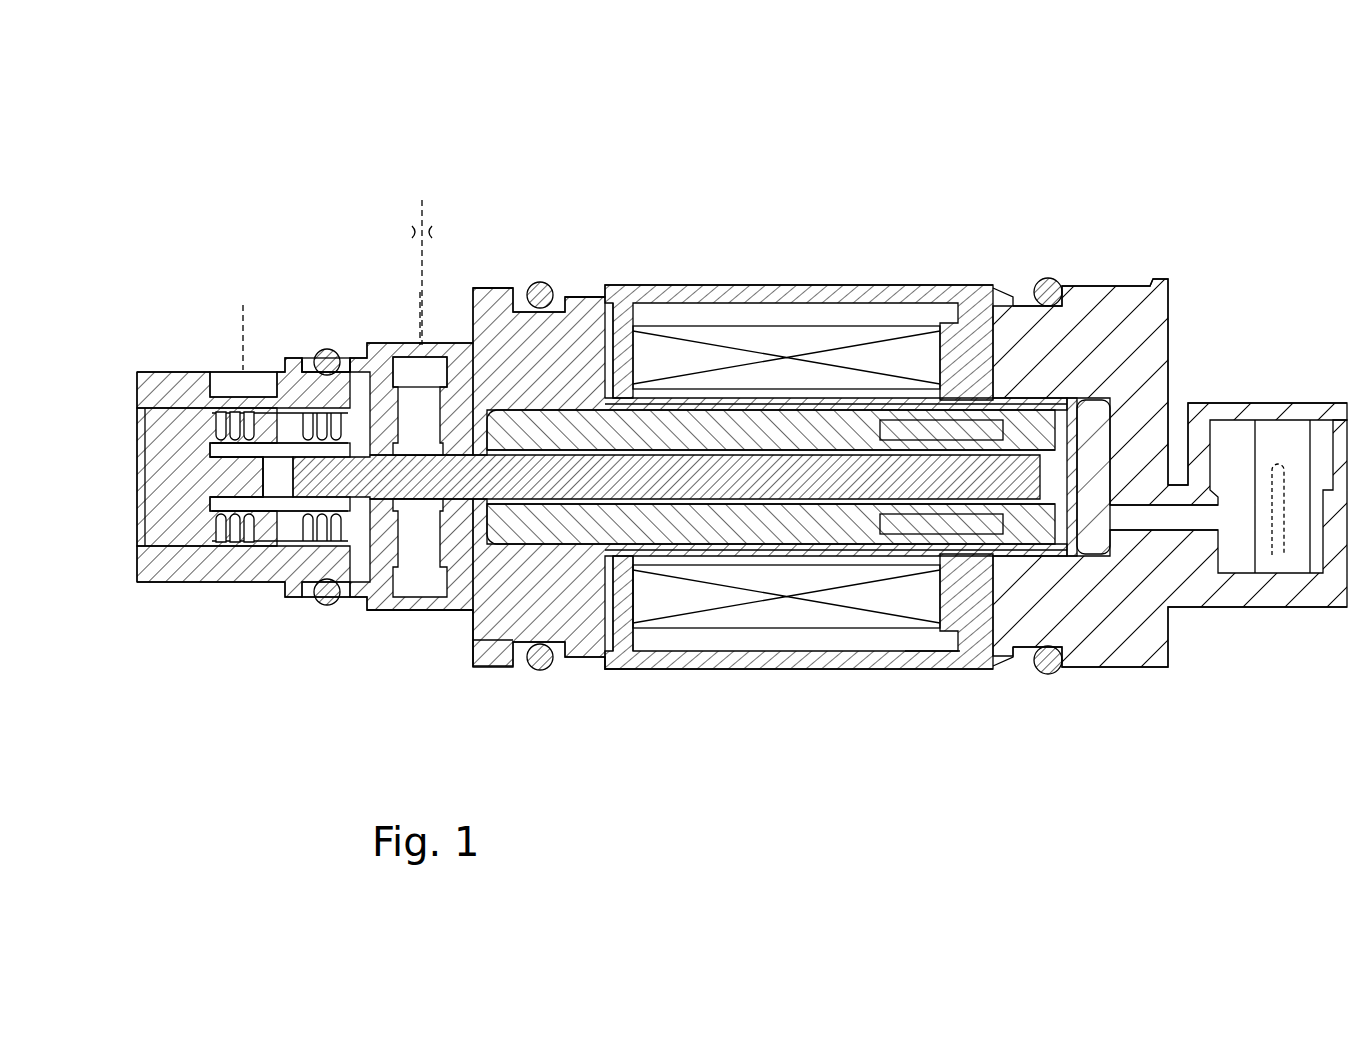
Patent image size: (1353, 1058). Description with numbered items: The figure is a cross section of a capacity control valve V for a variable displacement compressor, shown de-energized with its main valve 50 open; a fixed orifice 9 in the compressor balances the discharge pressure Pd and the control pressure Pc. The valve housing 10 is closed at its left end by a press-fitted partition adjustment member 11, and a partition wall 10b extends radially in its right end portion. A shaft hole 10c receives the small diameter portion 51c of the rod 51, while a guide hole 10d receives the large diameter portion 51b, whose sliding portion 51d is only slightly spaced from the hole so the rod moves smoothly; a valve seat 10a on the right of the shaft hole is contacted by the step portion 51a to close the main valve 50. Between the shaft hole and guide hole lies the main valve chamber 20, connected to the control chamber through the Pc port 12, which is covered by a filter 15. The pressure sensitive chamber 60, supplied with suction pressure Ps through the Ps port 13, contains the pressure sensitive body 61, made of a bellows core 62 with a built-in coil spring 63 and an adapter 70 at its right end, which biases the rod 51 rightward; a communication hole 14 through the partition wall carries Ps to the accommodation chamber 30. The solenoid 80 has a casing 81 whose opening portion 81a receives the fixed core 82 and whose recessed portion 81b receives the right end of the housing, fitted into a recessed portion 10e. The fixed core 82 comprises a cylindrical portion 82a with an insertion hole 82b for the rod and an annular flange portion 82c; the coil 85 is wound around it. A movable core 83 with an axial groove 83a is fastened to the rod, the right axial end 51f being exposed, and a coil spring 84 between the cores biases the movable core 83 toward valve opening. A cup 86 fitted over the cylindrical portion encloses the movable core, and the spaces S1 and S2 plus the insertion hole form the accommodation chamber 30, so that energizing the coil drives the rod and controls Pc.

The capacity control valve V is at (1243, 150).
The valve housing 10 is at (142, 328).
The partition adjustment member 11 is at (136, 460).
The Pc port 12 is at (407, 342).
The Ps port 13 is at (227, 372).
The communication hole 14 is at (450, 613).
The filter 15 is at (395, 613).
The main valve chamber 20 is at (445, 343).
The fixed orifice 9 is at (432, 232).
The main valve 50 is at (245, 215).
The valve seat 10a is at (320, 346).
The step portion 51a is at (345, 357).
The small diameter portion 51c is at (318, 608).
The shaft hole 10c is at (370, 612).
The partition wall 10b is at (417, 612).
The guide hole 10d is at (502, 287).
The sliding portion 51d is at (550, 283).
The recessed portion 10e is at (578, 292).
The pressure sensitive chamber 60 is at (203, 372).
The pressure sensitive body 61 is at (203, 582).
The bellows core 62 is at (243, 582).
The coil spring 63 is at (273, 582).
The adapter 70 is at (300, 600).
The suction pressure Ps is at (243, 324).
The discharge pressure Pd is at (422, 259).
The control pressure Pc is at (420, 306).
The accommodation chamber 30 is at (786, 596).
The space S1 is at (547, 675).
The space S2 is at (917, 670).
The rod 51 is at (722, 545).
The large diameter portion 51b is at (772, 560).
The right axial end 51f is at (1072, 465).
The solenoid 80 is at (1132, 262).
The casing 81 is at (557, 690).
The opening portion 81a is at (620, 640).
The recessed portion 81b is at (596, 668).
The fixed core 82 is at (933, 287).
The cylindrical portion 82a is at (877, 287).
The insertion hole 82b is at (758, 287).
The flange portion 82c is at (617, 300).
The movable core 83 is at (1058, 277).
The groove 83a is at (993, 287).
The coil spring 84 is at (1040, 675).
The coil 85 is at (838, 600).
The cup 86 is at (1107, 395).